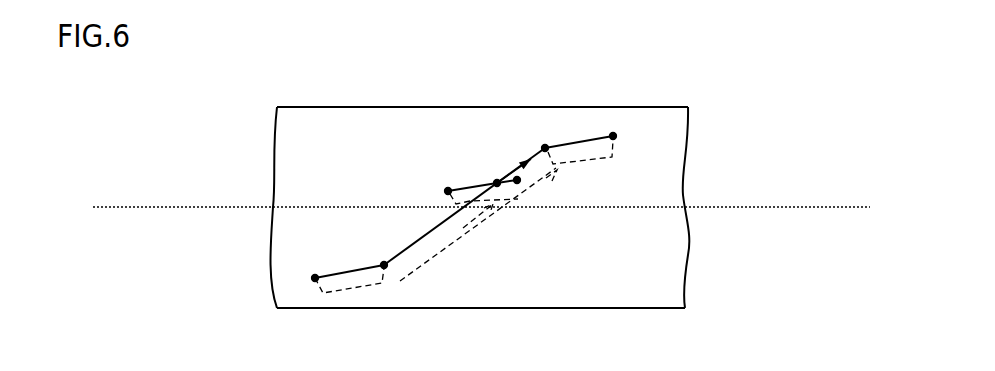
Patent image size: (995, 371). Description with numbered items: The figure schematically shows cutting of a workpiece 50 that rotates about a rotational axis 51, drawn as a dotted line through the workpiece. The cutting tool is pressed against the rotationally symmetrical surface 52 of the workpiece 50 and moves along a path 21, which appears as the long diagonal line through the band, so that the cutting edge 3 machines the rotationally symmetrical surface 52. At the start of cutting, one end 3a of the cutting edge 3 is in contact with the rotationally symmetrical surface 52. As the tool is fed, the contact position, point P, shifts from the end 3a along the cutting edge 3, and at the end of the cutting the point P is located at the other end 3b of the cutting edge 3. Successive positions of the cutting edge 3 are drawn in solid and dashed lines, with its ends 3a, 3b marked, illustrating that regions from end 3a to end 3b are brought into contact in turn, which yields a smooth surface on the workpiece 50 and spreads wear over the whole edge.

The cutting edge 3 is at (350, 269).
The end of cutting edge 3a is at (384, 270).
The other end of cutting edge 3b is at (315, 283).
The point P is at (495, 178).
The path 21 is at (438, 228).
The workpiece 50 is at (588, 296).
The rotational axis 51 is at (130, 209).
The rotationally symmetrical surface 52 is at (353, 166).